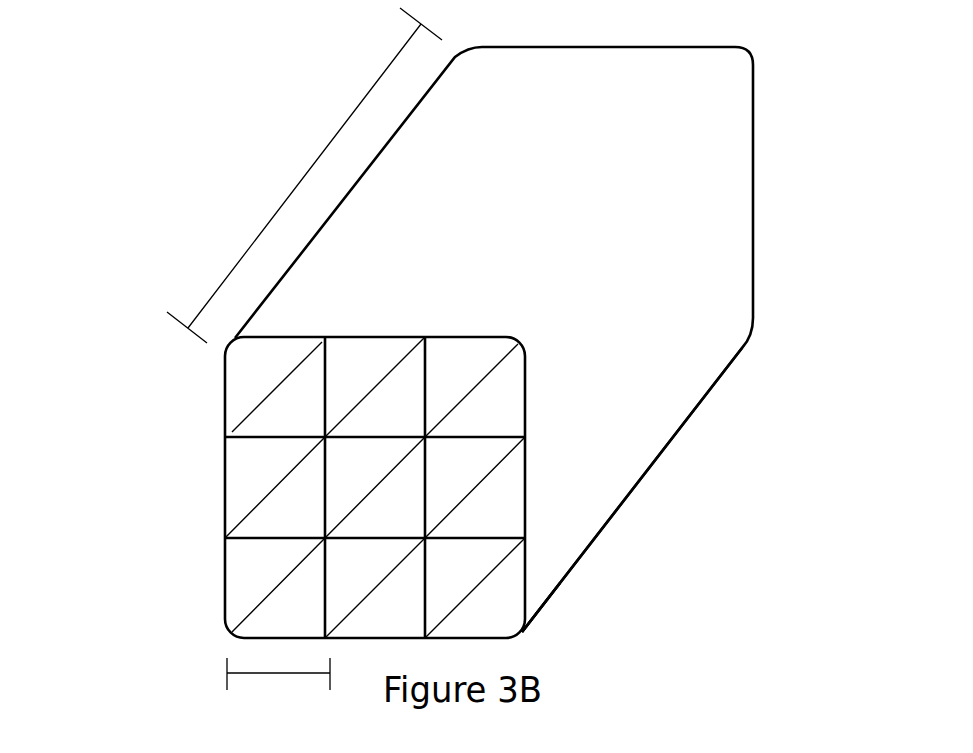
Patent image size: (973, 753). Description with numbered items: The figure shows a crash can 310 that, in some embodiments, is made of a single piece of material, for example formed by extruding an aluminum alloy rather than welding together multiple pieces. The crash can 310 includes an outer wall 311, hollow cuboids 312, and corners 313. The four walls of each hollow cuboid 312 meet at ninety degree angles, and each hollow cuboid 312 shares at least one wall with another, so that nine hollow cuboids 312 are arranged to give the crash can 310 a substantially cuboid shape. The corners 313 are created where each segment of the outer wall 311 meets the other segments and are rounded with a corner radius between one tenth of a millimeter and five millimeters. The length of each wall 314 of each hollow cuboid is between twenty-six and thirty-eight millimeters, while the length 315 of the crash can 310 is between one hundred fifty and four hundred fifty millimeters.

The crash can 310 is at (640, 132).
The outer wall 311 is at (663, 337).
The hollow cuboids 312 is at (295, 400).
The corners 313 is at (535, 623).
The length of each wall 314 is at (278, 688).
The length of crash can 315 is at (304, 175).